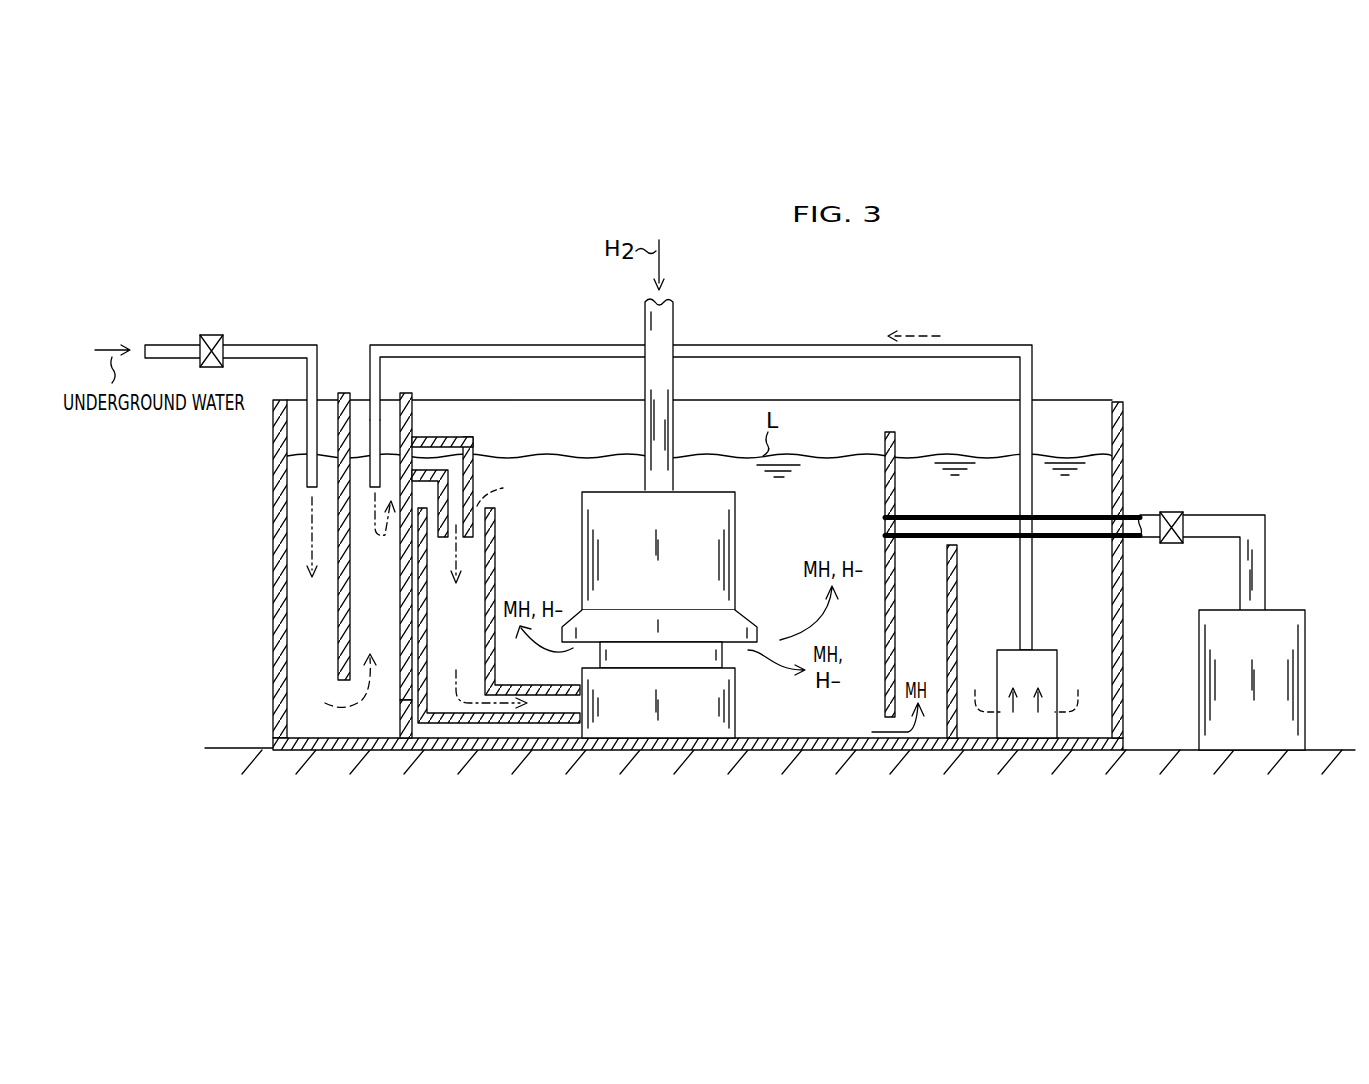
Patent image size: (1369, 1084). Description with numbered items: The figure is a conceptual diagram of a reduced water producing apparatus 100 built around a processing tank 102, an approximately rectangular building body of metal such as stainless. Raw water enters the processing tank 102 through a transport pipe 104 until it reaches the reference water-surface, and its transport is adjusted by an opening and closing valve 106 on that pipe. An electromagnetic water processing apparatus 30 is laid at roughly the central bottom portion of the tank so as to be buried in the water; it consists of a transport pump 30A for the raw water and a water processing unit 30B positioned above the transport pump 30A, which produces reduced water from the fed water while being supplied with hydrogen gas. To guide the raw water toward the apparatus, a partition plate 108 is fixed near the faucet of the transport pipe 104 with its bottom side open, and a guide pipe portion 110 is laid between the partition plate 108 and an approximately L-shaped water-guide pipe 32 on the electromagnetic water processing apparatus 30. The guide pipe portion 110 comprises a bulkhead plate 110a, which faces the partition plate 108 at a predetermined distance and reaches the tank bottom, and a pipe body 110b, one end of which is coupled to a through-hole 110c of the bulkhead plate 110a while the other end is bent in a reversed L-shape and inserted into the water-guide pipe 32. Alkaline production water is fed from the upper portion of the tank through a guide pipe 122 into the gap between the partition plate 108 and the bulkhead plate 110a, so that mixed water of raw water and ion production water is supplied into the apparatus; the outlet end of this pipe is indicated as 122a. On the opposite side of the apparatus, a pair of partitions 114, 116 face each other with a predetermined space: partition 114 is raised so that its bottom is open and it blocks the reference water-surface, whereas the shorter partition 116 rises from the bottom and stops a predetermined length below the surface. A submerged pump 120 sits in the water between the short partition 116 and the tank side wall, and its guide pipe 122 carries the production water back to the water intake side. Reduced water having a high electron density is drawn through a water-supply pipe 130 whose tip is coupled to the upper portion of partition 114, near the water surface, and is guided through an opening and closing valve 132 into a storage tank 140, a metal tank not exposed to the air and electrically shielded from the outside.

The reduced water producing apparatus 100 is at (1247, 397).
The processing tank 102 is at (273, 652).
The transport pipe 104 is at (271, 344).
The opening and closing valve 106 is at (208, 334).
The partition plate 108 is at (335, 627).
The guide pipe portion 110 is at (458, 437).
The bulkhead plate 110a is at (398, 730).
The pipe body 110b is at (518, 475).
The through-hole 110c is at (418, 446).
The partition plate 114 is at (885, 492).
The partition plate 116 is at (959, 567).
The submerged pump 120 is at (1027, 718).
The guide pipe 122 is at (1033, 368).
The outlet end of return pipe 122a is at (382, 372).
The water-supply pipe 130 is at (1265, 525).
The opening and closing valve 132 is at (1171, 512).
The storage tank 140 is at (1305, 693).
The electromagnetic water processing apparatus 30 is at (676, 660).
The transport pump 30A is at (735, 710).
The water processing unit 30B is at (735, 525).
The water-guide pipe 32 is at (497, 562).